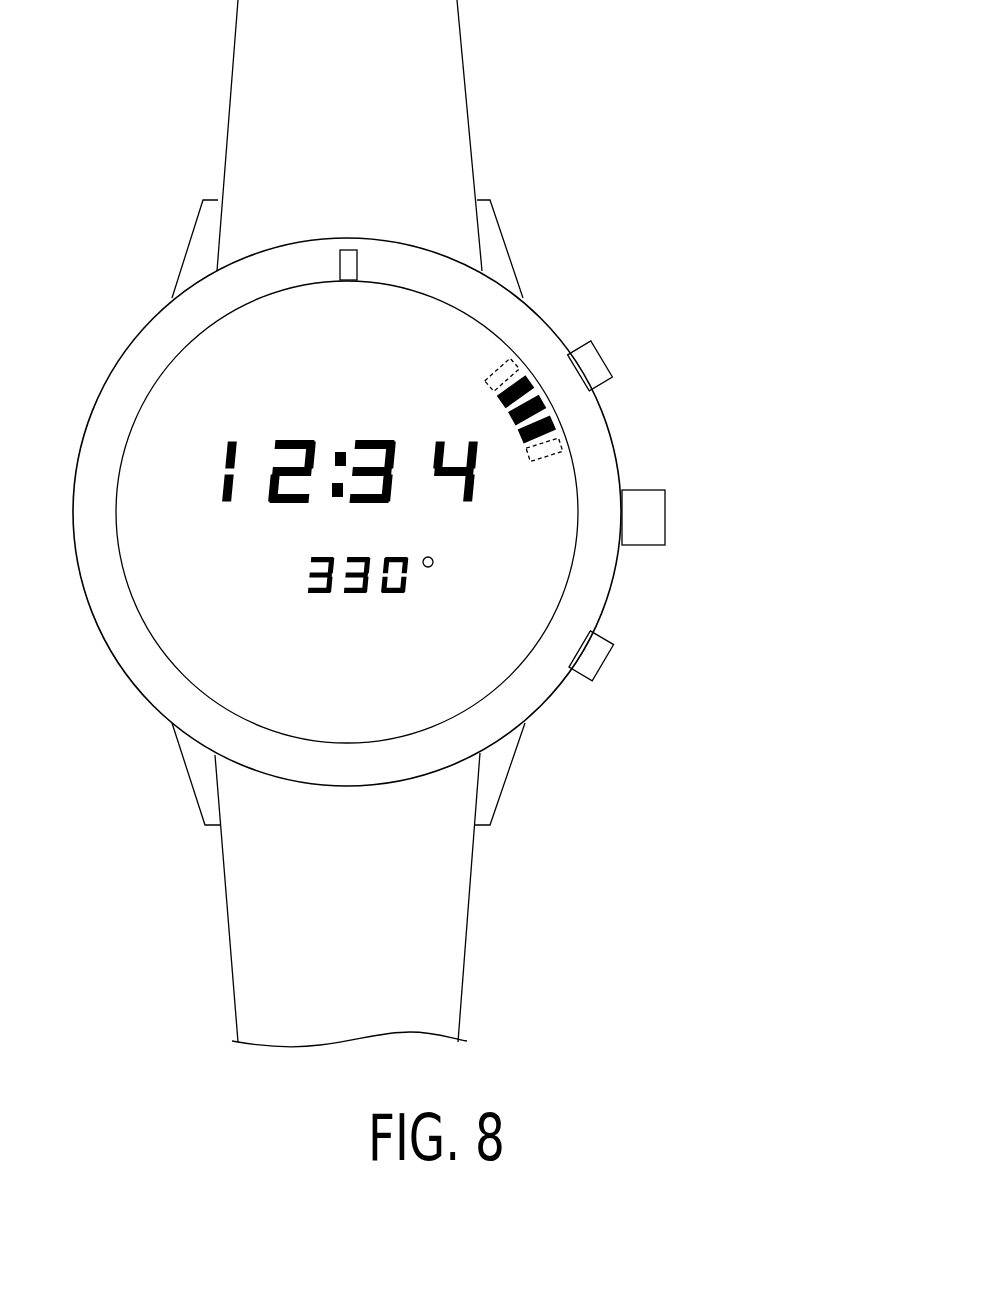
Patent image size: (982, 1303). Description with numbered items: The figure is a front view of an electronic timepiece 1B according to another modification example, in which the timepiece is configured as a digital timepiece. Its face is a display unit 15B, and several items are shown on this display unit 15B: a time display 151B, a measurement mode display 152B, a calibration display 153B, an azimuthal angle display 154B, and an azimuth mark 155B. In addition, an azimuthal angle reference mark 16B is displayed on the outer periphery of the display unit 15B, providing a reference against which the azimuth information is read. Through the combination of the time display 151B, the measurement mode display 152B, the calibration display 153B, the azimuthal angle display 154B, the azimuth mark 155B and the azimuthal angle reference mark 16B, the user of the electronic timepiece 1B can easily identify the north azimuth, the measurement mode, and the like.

The electronic timepiece 1B is at (758, 405).
The display unit 15B is at (223, 358).
The azimuthal angle reference mark 16B is at (345, 286).
The time display 151B is at (413, 403).
The measurement mode display 152B is at (213, 552).
The calibration display 153B is at (233, 605).
The azimuthal angle display 154B is at (376, 606).
The azimuth mark 155B is at (547, 463).